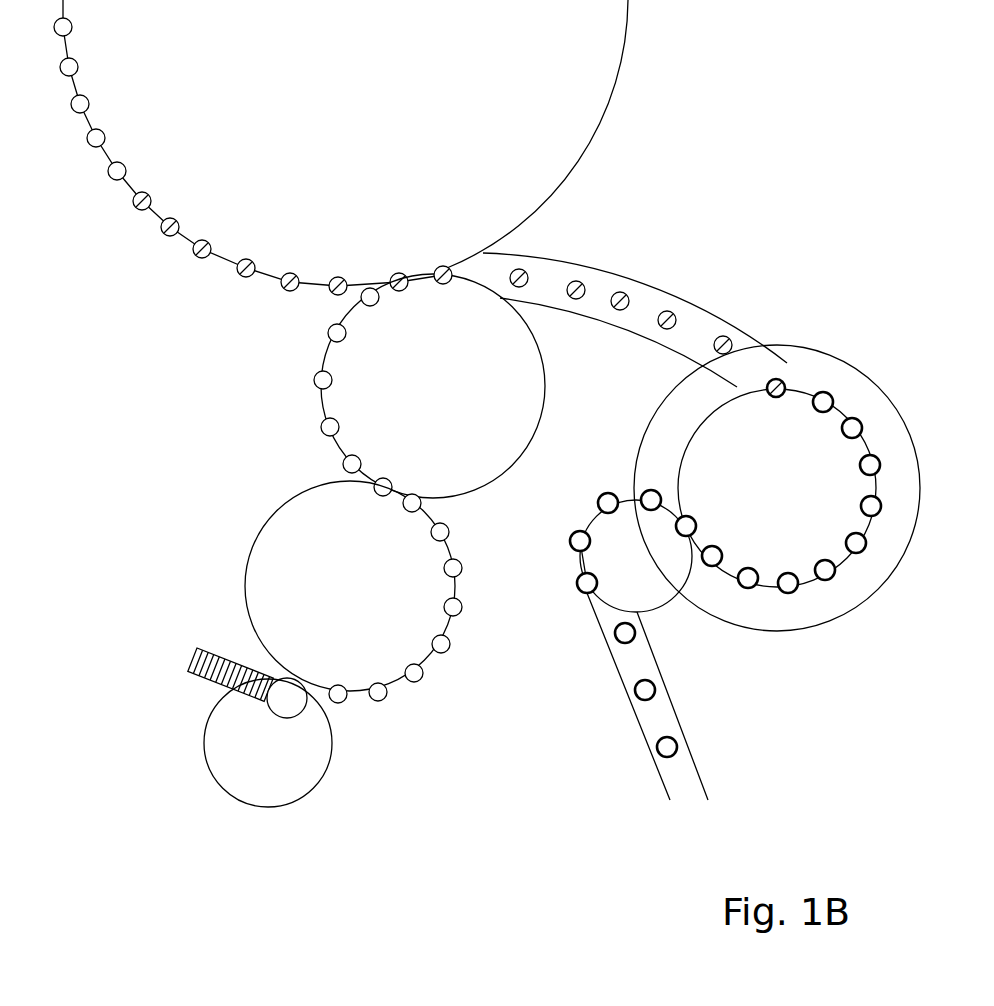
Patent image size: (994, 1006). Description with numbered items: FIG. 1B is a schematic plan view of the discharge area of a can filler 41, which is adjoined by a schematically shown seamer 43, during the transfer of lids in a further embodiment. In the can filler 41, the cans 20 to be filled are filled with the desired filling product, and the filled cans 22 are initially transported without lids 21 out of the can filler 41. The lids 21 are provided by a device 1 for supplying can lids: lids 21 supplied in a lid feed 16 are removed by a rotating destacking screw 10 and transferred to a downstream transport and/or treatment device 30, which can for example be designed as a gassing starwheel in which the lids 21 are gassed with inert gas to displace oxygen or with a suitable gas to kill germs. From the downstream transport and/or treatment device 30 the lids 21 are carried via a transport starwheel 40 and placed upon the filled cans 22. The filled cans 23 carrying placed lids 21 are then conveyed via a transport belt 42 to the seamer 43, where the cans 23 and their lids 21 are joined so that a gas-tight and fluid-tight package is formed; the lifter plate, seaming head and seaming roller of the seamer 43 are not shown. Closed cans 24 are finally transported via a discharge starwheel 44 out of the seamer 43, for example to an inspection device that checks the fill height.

The device for supplying can lids 1 is at (297, 734).
The rotating destacking screw 10 is at (295, 703).
The lid feed 16 is at (202, 682).
The cans to be filled 20 is at (110, 178).
The can lid 21 is at (417, 680).
The filled can 22 is at (200, 256).
The filled can with lid placed 23 is at (443, 266).
The closed can 24 is at (820, 393).
The downstream transport and/or treatment device 30 is at (273, 578).
The transport starwheel 40 is at (527, 397).
The can filler 41 is at (570, 113).
The transport belt 42 is at (702, 327).
The seamer 43 is at (885, 422).
The discharge starwheel 44 is at (652, 592).